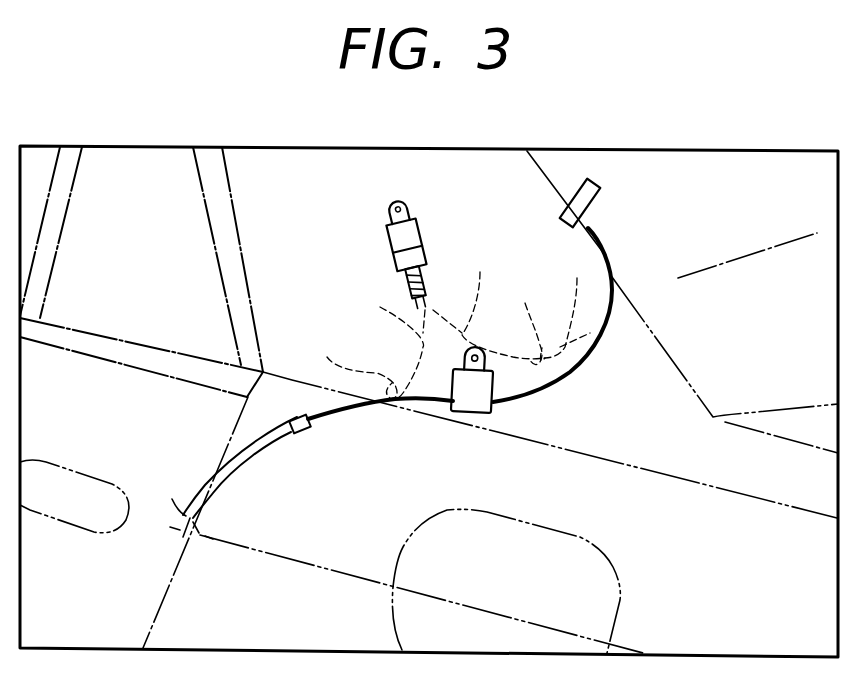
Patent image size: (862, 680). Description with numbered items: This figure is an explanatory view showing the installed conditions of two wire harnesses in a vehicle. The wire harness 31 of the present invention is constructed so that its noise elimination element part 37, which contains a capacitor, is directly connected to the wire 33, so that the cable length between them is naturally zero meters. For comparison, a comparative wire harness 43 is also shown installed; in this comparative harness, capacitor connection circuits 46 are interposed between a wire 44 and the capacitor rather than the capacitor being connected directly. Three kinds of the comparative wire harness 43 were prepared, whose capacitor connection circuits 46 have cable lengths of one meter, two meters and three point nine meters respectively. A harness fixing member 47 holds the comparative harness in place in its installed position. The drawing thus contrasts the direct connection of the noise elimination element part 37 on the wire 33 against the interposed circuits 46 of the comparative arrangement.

The wire harness 31 is at (560, 396).
The wire 33 is at (573, 370).
The noise elimination element part 37 is at (473, 399).
The comparative wire harness 43 is at (436, 228).
The wire 44 is at (565, 305).
The capacitor connection circuits 46 is at (446, 323).
The harness fixing member 47 is at (427, 338).